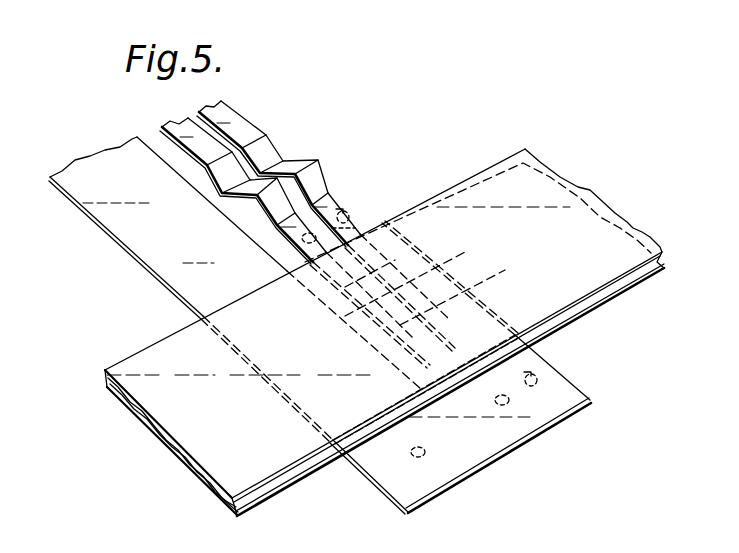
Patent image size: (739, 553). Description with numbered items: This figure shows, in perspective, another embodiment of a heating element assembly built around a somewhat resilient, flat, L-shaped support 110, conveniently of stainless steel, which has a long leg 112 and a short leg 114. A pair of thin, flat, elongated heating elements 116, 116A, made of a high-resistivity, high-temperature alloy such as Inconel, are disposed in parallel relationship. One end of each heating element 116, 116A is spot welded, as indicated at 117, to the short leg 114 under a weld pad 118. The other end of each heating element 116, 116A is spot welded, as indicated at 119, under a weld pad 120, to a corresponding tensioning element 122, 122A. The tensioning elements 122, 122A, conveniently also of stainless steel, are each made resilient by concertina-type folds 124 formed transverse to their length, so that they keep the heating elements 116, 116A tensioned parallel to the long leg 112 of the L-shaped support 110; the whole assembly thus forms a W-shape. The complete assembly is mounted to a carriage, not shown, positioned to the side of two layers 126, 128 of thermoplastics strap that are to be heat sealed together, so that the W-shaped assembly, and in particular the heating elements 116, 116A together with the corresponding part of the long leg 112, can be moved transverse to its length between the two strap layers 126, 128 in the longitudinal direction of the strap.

The L-shaped support 110 is at (175, 297).
The long leg 112 is at (153, 258).
The short leg 114 is at (458, 481).
The heating element 116 is at (477, 284).
The heating element 116A is at (432, 270).
The spot weld 117 is at (541, 369).
The weld pad 118 is at (542, 434).
The spot weld 119 is at (366, 212).
The weld pad 120 is at (352, 224).
The tensioning element 122 is at (313, 183).
The tensioning element 122A is at (226, 173).
The concertina-type folds 124 is at (265, 168).
The strap layer 126 is at (478, 177).
The strap layer 128 is at (610, 311).